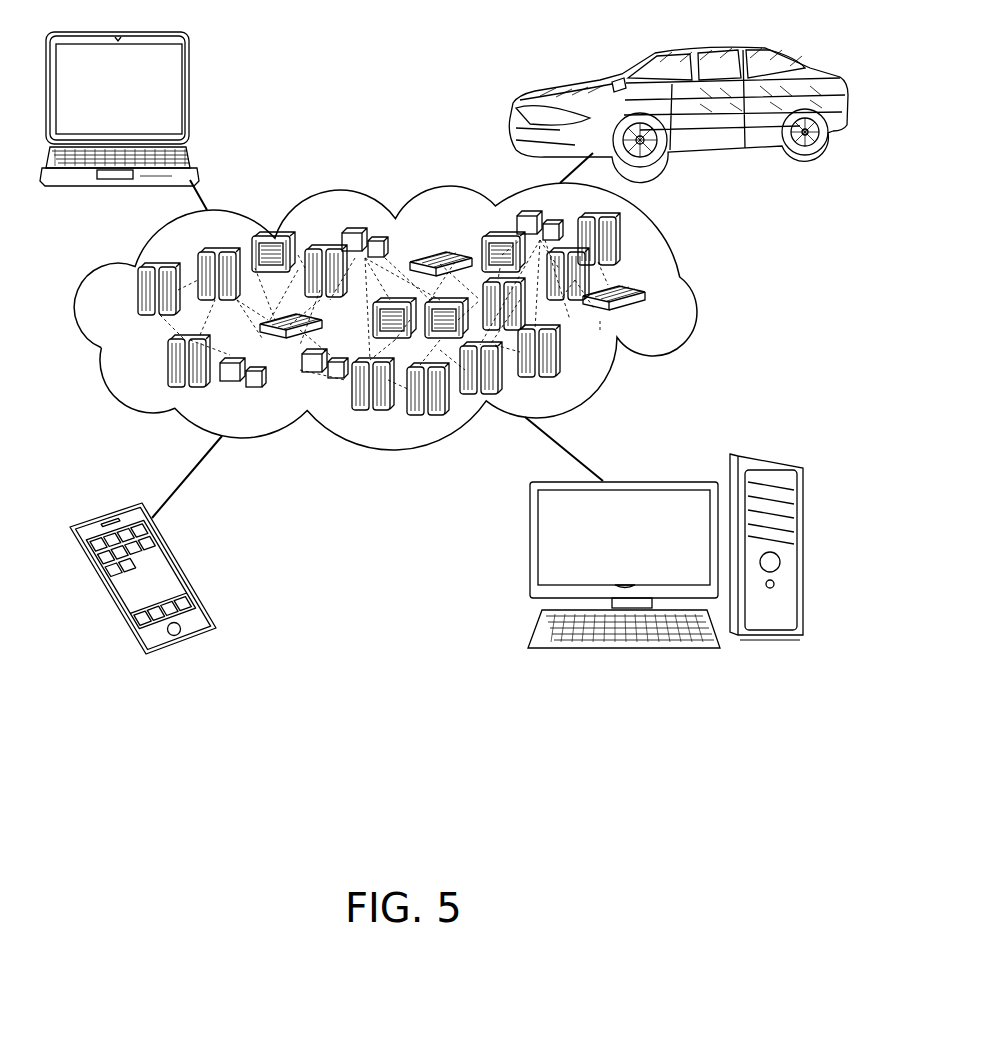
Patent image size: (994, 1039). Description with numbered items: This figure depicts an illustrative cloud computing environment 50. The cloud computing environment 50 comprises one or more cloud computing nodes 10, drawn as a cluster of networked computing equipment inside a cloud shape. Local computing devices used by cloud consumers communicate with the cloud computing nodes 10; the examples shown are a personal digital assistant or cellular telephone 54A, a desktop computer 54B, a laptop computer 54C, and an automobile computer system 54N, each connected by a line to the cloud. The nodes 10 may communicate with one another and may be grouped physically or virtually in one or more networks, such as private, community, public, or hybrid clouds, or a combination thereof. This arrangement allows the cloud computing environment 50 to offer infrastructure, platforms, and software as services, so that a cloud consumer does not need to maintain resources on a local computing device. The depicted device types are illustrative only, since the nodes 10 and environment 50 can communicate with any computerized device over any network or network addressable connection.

The cloud computing environment 50 is at (693, 302).
The cloud computing node 10 is at (648, 315).
The personal digital assistant or cellular telephone 54A is at (170, 568).
The desktop computer 54B is at (677, 482).
The laptop computer 54C is at (170, 106).
The automobile computer system 54N is at (514, 103).